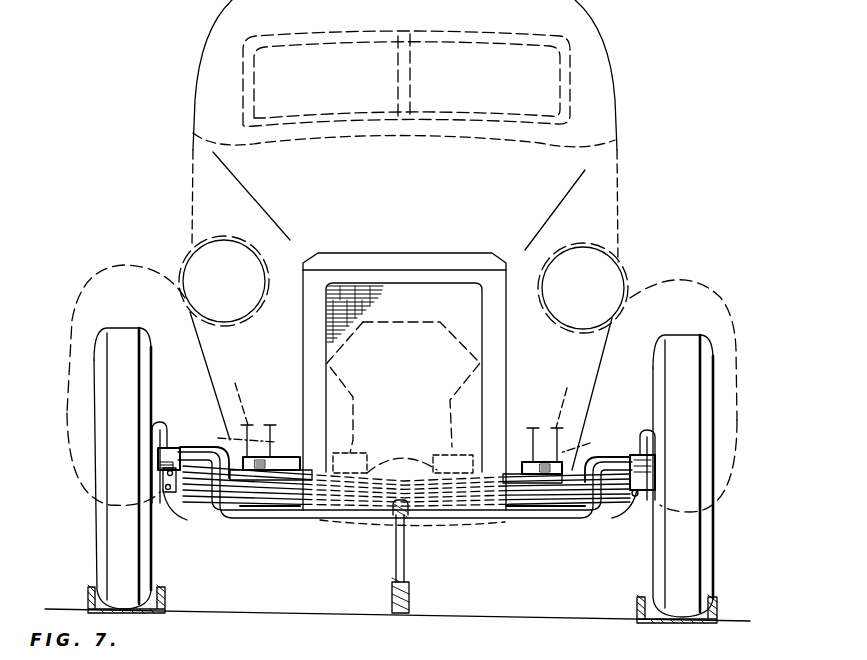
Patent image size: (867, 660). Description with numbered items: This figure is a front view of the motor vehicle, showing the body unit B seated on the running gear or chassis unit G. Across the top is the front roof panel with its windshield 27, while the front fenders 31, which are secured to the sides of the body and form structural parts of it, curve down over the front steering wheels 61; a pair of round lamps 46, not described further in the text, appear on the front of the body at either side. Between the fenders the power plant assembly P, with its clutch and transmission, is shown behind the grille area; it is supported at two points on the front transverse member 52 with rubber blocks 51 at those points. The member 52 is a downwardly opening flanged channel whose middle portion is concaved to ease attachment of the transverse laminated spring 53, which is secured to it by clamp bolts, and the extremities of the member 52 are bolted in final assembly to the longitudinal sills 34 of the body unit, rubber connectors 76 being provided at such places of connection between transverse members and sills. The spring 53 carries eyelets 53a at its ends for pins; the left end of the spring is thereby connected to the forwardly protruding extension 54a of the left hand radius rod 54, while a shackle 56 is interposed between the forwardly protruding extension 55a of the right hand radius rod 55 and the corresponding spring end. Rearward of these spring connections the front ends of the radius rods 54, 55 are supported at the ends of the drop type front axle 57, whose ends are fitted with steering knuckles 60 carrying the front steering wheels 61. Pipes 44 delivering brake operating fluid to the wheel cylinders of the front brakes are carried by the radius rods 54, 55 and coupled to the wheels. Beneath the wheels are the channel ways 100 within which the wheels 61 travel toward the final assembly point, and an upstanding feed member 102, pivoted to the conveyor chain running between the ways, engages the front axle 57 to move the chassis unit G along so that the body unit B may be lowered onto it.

The windshield 27 is at (257, 82).
The body unit B is at (592, 126).
The headlight 46 is at (207, 255).
The front fenders 31 is at (95, 303).
The front steering wheels 61 is at (118, 411).
The channel ways 100 is at (166, 596).
The power plant assembly P is at (457, 357).
The rubber blocks 51 is at (350, 463).
The right hand radius rod 55 is at (265, 478).
The drop type front axle 57 is at (523, 520).
The transverse laminated spring 53 is at (285, 490).
The left hand radius rod 54 is at (560, 492).
The forwardly protruding extension of the right hand radius rod 55a is at (172, 450).
The forwardly protruding extension of the left hand radius rod 54a is at (640, 454).
The eyelets 53a is at (172, 500).
The steering knuckles 60 is at (157, 420).
The pipes 44 is at (660, 433).
The shackle 56 is at (160, 476).
The front transverse member 52 is at (286, 435).
The sills 34 is at (399, 397).
The connectors 76 is at (400, 441).
The feed members 102 is at (407, 563).
The running gear or chassis unit G is at (374, 520).